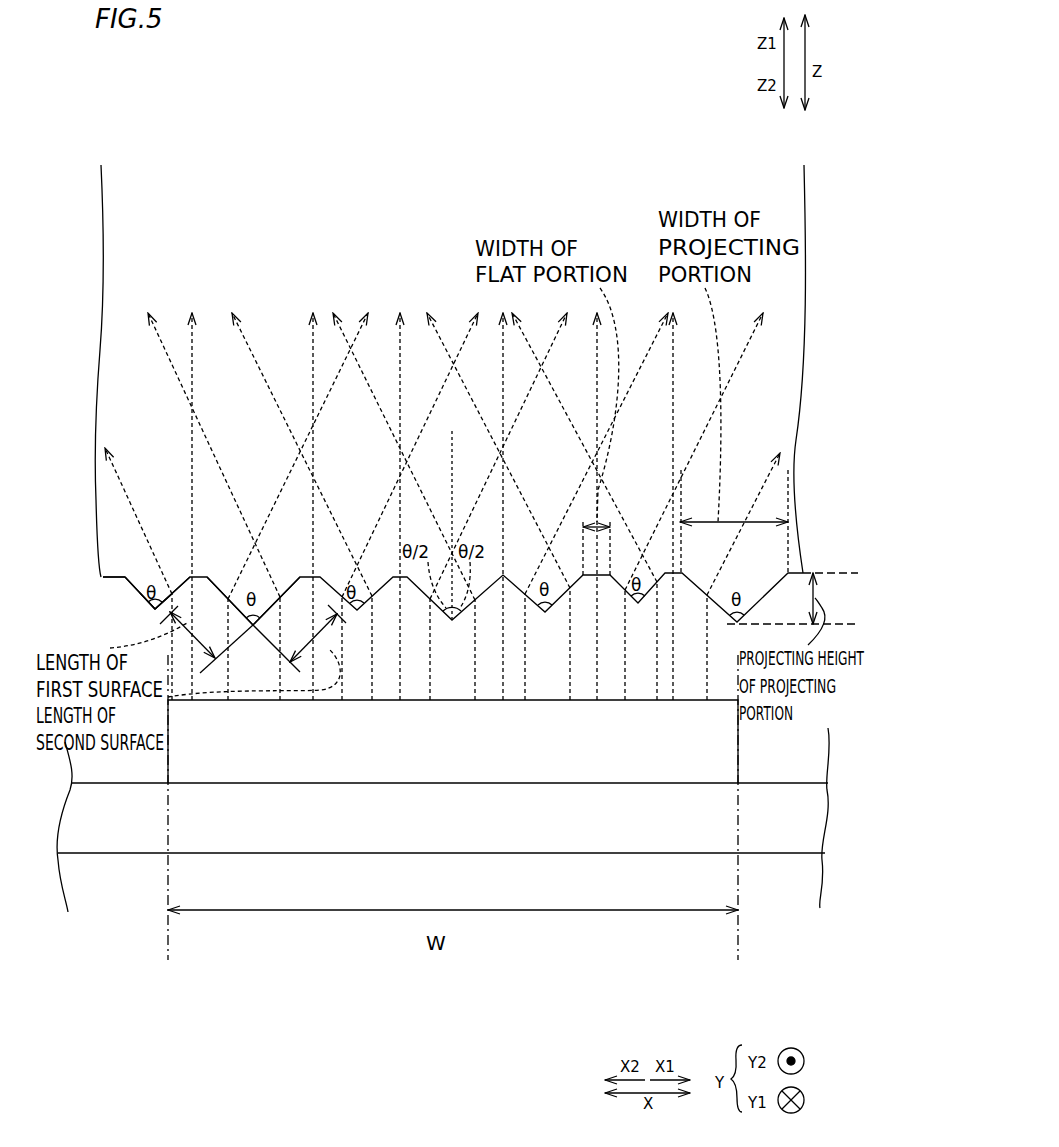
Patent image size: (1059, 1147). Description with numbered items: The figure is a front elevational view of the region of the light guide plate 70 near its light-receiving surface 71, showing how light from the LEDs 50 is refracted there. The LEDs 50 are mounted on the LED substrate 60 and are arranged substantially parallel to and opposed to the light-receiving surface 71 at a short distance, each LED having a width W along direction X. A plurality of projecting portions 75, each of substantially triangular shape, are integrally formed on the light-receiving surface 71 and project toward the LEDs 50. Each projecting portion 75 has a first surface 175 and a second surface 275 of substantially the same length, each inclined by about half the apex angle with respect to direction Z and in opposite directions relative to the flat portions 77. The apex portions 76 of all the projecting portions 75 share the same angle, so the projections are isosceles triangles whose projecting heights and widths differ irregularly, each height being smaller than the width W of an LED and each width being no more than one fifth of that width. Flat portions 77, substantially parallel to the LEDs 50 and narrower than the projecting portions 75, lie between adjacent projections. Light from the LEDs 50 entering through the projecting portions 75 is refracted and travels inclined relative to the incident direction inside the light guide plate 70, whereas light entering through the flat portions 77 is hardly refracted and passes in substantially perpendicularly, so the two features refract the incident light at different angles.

The light guide plate 70 is at (127, 207).
The light-receiving surface 71 is at (110, 578).
The projecting portions 75 is at (143, 596).
The apex portions 76 is at (155, 609).
The flat portions 77 is at (172, 594).
The first surface 175 is at (226, 598).
The second surface 275 is at (283, 596).
The LEDs 50 is at (170, 748).
The LED substrate 60 is at (130, 855).